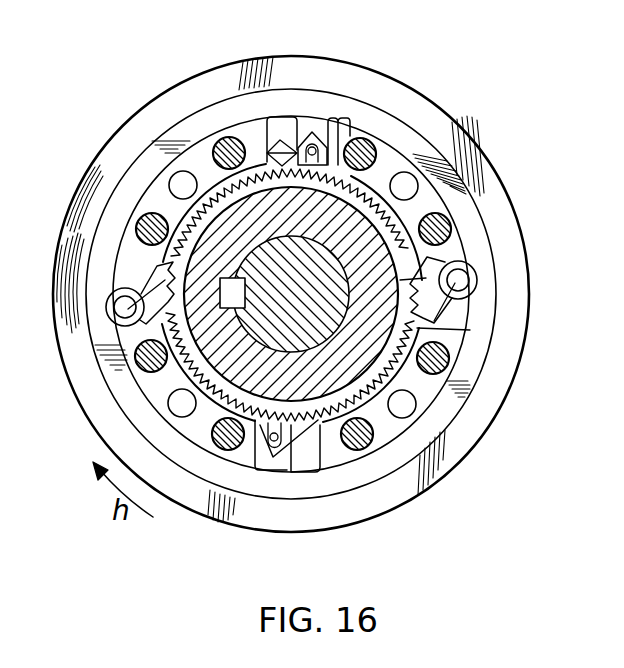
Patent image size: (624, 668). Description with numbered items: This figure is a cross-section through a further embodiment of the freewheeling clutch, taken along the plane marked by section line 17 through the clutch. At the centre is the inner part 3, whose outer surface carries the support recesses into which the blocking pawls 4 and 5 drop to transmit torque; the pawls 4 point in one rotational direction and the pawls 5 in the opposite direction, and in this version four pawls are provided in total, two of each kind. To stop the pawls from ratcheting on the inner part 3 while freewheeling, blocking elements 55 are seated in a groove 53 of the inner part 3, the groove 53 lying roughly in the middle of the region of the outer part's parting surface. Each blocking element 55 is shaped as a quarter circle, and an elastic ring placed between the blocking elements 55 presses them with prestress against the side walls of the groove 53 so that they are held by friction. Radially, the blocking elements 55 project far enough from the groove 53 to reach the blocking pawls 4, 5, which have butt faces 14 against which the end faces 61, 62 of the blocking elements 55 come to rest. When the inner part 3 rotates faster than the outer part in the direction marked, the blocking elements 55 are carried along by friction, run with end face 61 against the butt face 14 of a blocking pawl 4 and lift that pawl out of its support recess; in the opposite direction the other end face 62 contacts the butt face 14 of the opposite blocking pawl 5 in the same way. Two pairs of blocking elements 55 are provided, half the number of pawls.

The inner part 3 is at (290, 282).
The blocking pawl 4 is at (478, 299).
The blocking pawl 5 is at (295, 160).
The butt face 14 is at (450, 240).
The section line 17- 17 is at (250, 15).
The groove 53 is at (447, 386).
The blocking element 55 is at (402, 157).
The end face 61 is at (367, 190).
The end face 62 is at (470, 330).